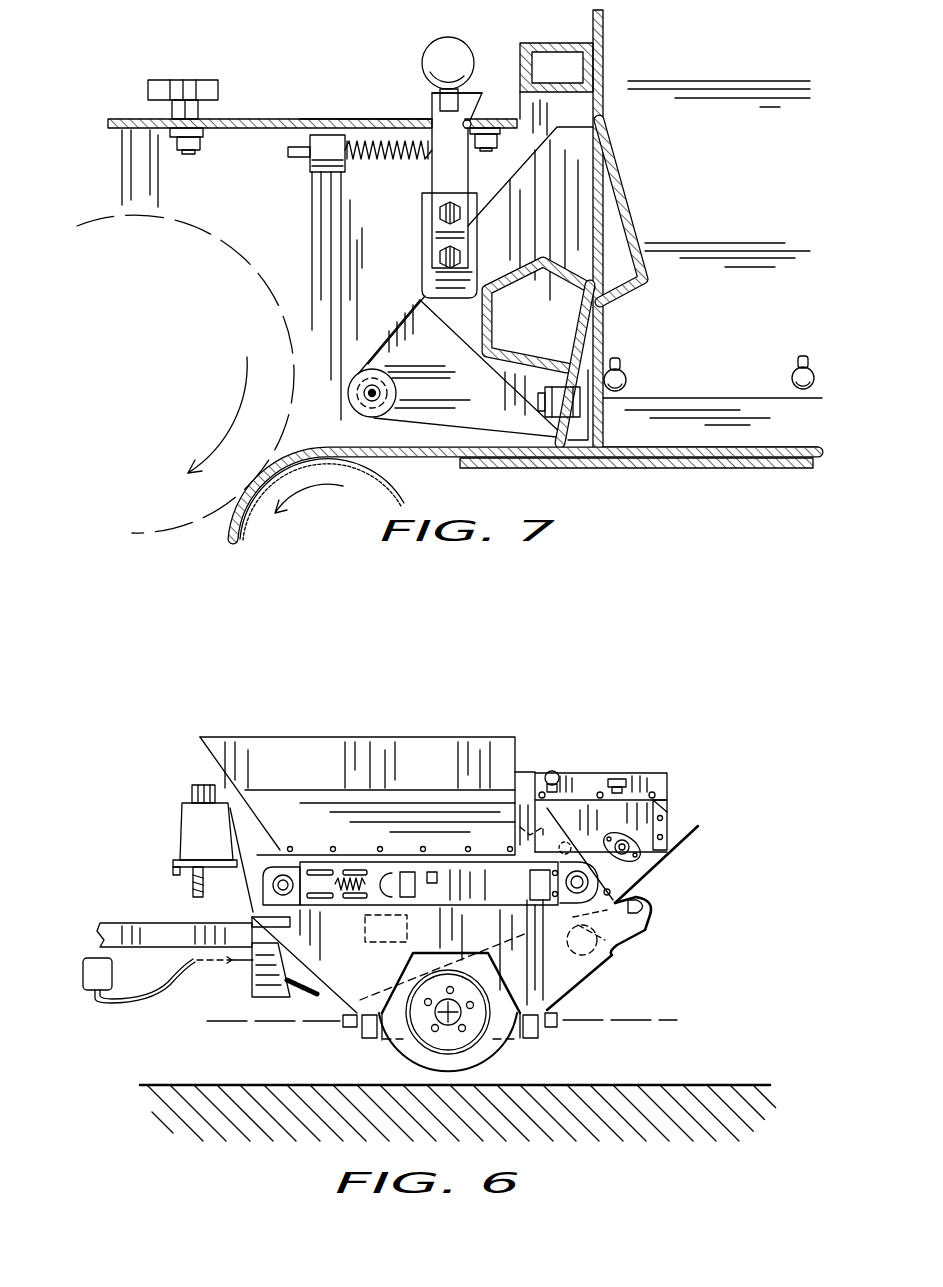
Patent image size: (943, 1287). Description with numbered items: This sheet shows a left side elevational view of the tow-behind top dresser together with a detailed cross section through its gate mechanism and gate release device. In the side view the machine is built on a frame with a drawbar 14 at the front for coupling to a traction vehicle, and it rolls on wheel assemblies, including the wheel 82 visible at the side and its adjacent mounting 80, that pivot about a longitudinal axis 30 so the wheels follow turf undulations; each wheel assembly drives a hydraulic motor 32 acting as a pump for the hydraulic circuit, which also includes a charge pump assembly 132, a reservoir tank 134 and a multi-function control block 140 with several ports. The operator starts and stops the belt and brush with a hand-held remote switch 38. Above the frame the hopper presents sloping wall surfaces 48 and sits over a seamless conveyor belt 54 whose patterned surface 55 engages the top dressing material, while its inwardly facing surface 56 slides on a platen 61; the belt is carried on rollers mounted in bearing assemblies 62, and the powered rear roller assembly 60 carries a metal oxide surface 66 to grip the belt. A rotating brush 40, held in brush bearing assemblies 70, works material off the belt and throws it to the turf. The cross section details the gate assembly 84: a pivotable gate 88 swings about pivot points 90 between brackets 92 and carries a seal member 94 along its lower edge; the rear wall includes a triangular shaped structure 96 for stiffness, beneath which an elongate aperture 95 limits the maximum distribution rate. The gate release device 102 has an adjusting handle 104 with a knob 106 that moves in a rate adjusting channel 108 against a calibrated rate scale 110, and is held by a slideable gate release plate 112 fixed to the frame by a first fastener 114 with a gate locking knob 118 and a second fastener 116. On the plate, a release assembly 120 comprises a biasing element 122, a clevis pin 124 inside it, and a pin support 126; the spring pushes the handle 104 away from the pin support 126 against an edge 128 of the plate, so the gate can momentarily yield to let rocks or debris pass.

In FIG. 6, the drawbar 14 is at (170, 921).
In FIG. 6, the longitudinal axis 30 is at (675, 1025).
In FIG. 6, the hydraulic motor 32 is at (617, 940).
In FIG. 6, the remote switch 38 is at (90, 992).
In FIG. 7, the brush 40 is at (190, 228).
In FIG. 7, the hopper wall surface 48 is at (601, 100).
In FIG. 7, the conveyor belt 54 is at (763, 447).
In FIG. 7, the patterned belt surface 55 is at (688, 447).
In FIG. 7, the inwardly facing surface 56 is at (458, 460).
In FIG. 7, the rear roller assembly 60 is at (283, 530).
In FIG. 7, the platen 61 is at (700, 468).
In FIG. 6, the bearing assemblies 62 is at (281, 870).
In FIG. 7, the metal oxide surface 66 is at (392, 486).
In FIG. 6, the brush bearing assemblies 70 is at (640, 862).
In FIG. 6, the axle bolt 80 is at (345, 1026).
In FIG. 6, the wheel 82 is at (452, 1013).
In FIG. 7, the gate assembly 84 is at (388, 262).
In FIG. 7, the pivotable gate 88 is at (604, 323).
In FIG. 6, the pivotable gate 88 is at (520, 840).
In FIG. 7, the pivot points 90 is at (362, 398).
In FIG. 6, the pivot points 90 is at (552, 822).
In FIG. 7, the brackets 92 is at (555, 185).
In FIG. 7, the seal member 94 is at (548, 422).
In FIG. 7, the elongate aperture 95 is at (600, 418).
In FIG. 7, the triangular shaped structure 96 is at (632, 226).
In FIG. 6, the triangular shaped structure 96 is at (432, 745).
In FIG. 7, the gate release device 102 is at (396, 89).
In FIG. 7, the adjusting handle 104 is at (480, 92).
In FIG. 7, the knob 106 is at (443, 38).
In FIG. 6, the knob 106 is at (552, 770).
In FIG. 7, the rate adjusting channel 108 is at (232, 118).
In FIG. 7, the rate scale 110 is at (356, 118).
In FIG. 7, the gate release plate 112 is at (220, 138).
In FIG. 7, the first fastener 114 is at (176, 147).
In FIG. 7, the second fastener 116 is at (496, 151).
In FIG. 7, the gate locking knob 118 is at (176, 80).
In FIG. 6, the gate locking knob 118 is at (625, 782).
In FIG. 7, the release assembly 120 is at (356, 198).
In FIG. 7, the biasing element 122 is at (345, 202).
In FIG. 7, the clevis pin 124 is at (288, 152).
In FIG. 7, the pin support 126 is at (318, 172).
In FIG. 7, the edge 128 is at (470, 118).
In FIG. 6, the charge pump assembly 132 is at (440, 918).
In FIG. 6, the reservoir tank 134 is at (183, 822).
In FIG. 6, the multi-function control block 140 is at (250, 992).